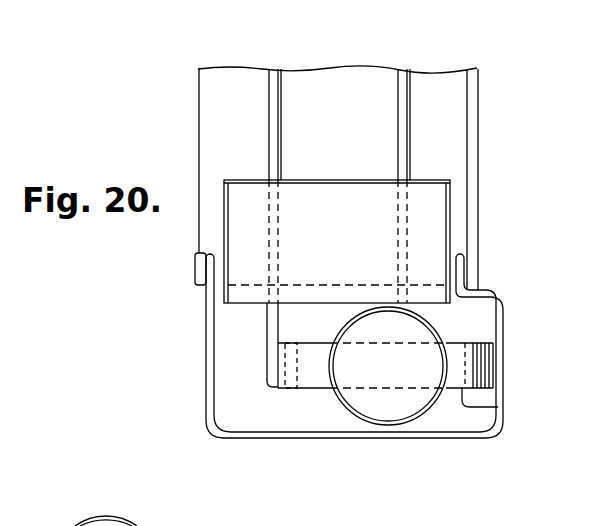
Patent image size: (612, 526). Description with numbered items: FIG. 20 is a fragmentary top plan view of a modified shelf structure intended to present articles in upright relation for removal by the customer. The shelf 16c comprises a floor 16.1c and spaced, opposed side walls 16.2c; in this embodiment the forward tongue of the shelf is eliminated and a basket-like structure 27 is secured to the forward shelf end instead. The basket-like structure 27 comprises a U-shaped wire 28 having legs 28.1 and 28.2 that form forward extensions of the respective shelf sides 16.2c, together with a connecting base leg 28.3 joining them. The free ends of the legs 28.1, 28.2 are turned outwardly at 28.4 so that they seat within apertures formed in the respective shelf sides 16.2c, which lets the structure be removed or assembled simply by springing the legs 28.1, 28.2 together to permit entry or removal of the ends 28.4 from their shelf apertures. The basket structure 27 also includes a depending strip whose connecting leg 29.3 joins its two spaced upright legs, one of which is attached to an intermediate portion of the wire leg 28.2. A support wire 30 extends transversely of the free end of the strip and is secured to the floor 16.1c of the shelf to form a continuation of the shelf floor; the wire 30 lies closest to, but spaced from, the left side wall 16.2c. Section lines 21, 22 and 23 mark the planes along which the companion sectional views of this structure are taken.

The shelf 16c is at (357, 164).
The shelf floor 16.1c is at (356, 52).
The shelf side wall 16.2c is at (233, 49).
The section line 21- 21 is at (179, 197).
The section line 22- 22 is at (271, 448).
The section line 23-23 / roller 23 is at (389, 413).
The basket-like structure 27 is at (190, 344).
The U-shaped wire 28 is at (346, 371).
The leg 28.1 is at (212, 323).
The leg 28.2 is at (497, 320).
The connecting base leg 28.3 is at (315, 439).
The outwardly turned free ends 28.4 is at (195, 262).
The connecting leg 29.3 is at (498, 410).
The support wire 30 is at (277, 333).